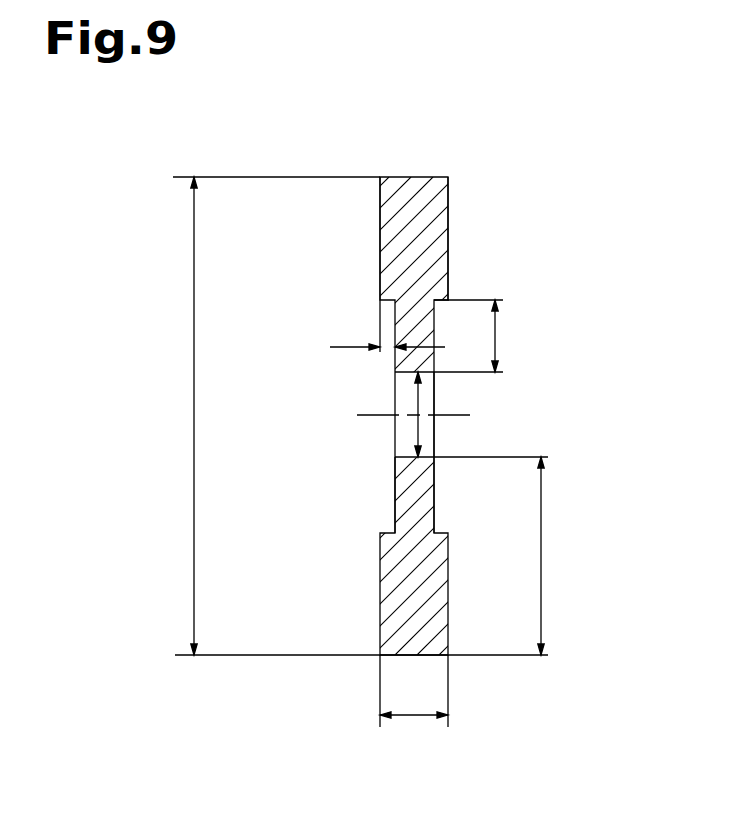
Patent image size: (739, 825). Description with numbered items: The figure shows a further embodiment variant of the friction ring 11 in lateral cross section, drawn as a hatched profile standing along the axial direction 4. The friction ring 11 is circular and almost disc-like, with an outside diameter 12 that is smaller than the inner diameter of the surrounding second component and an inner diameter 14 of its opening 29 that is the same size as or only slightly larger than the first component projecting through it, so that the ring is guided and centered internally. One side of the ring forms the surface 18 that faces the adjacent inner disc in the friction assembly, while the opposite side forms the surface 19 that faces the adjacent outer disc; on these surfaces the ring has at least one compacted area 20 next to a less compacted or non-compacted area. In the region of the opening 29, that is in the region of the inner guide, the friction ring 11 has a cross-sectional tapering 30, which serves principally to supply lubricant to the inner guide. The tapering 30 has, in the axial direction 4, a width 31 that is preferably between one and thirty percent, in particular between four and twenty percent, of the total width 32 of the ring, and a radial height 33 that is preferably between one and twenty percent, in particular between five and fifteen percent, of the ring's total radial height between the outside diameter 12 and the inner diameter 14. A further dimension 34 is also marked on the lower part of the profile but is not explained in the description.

The axial direction 4 is at (357, 425).
The friction ring 11 is at (480, 223).
The outside diameter 12 is at (187, 367).
The inner diameter 14 is at (420, 427).
The surface 18 is at (450, 275).
The surface 19 is at (380, 207).
The compacted area 20 is at (438, 490).
The opening 29 is at (467, 397).
The cross-sectional tapering 30 is at (378, 319).
The width 31 is at (381, 354).
The total width 32 is at (410, 716).
The height 33 is at (498, 333).
The length 34 is at (541, 579).